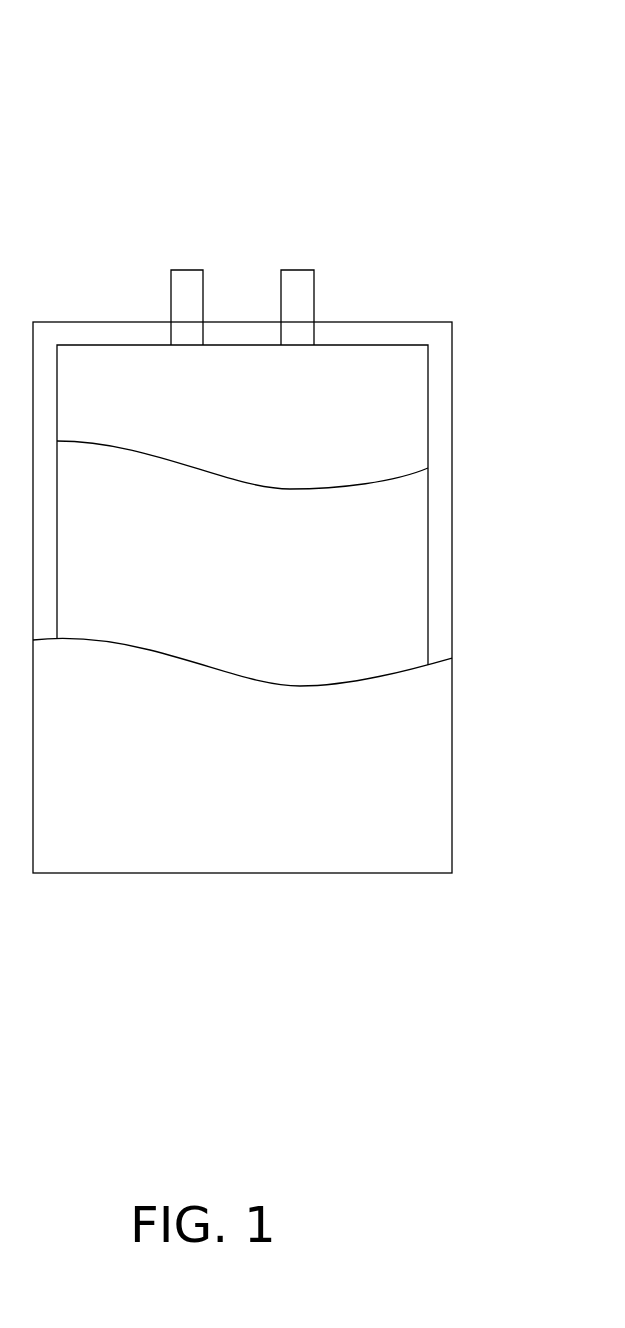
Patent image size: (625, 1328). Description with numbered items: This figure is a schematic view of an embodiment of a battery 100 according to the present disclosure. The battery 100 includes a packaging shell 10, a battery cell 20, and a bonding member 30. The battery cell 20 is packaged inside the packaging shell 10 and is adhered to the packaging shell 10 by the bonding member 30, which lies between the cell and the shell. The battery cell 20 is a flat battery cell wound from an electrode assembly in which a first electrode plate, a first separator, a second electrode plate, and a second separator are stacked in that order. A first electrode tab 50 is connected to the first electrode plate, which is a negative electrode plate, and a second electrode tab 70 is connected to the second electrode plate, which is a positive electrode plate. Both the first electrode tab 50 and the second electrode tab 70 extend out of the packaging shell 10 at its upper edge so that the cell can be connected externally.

The battery 100 is at (153, 48).
The packaging shell 10 is at (428, 727).
The battery cell 20 is at (402, 380).
The bonding member 30 is at (392, 532).
The first electrode tab 50 is at (185, 285).
The second electrode tab 70 is at (298, 285).